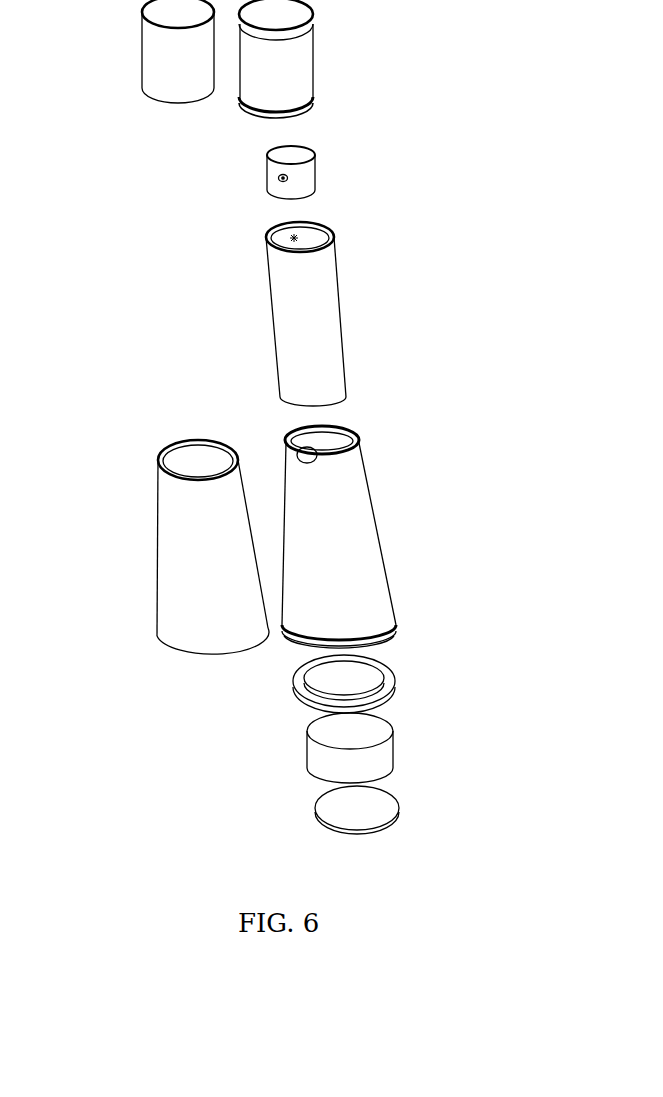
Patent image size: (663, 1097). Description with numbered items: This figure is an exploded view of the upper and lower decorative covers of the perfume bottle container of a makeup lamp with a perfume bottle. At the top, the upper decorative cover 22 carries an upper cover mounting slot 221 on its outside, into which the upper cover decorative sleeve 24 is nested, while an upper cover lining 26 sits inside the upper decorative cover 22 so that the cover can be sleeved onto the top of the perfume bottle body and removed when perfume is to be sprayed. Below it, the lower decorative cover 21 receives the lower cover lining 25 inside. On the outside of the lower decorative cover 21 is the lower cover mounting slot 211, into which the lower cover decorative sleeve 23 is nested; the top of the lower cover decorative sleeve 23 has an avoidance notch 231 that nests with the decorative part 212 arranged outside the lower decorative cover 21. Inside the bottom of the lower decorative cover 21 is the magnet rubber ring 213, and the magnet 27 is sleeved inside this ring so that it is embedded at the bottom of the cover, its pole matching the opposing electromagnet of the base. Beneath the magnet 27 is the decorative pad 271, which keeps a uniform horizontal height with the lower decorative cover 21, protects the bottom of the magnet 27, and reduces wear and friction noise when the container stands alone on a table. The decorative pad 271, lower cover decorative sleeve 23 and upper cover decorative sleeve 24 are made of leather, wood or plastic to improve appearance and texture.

The lower decorative cover 21 is at (360, 442).
The lower cover mounting slot 211 is at (345, 560).
The decorative part 212 is at (290, 448).
The magnet rubber ring 213 is at (392, 668).
The upper decorative cover 22 is at (318, 100).
The upper cover mounting slot 221 is at (246, 100).
The lower cover decorative sleeve 23 is at (185, 578).
The avoidance notch 231 is at (178, 482).
The upper cover decorative sleeve 24 is at (185, 57).
The lower cover lining 25 is at (305, 322).
The upper cover lining 26 is at (296, 182).
The magnet 27 is at (368, 758).
The decorative pad 271 is at (338, 803).